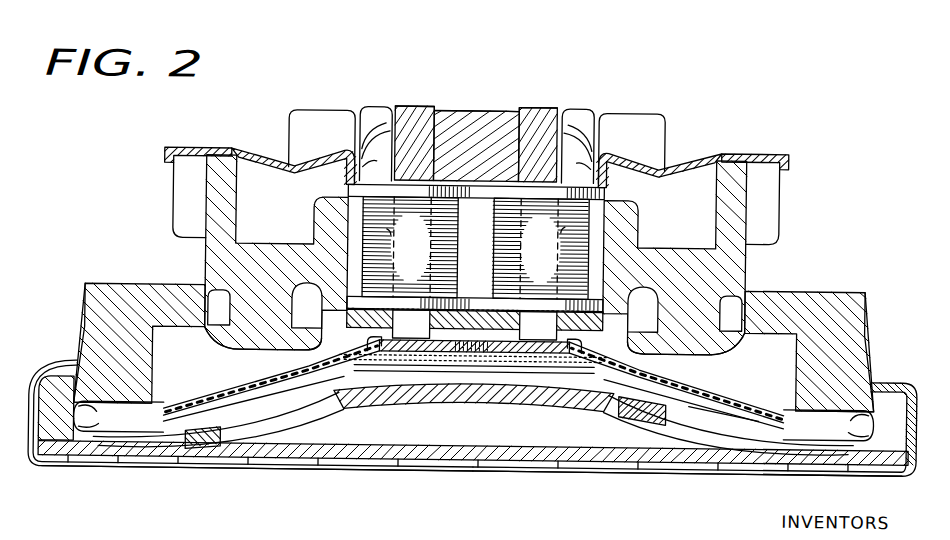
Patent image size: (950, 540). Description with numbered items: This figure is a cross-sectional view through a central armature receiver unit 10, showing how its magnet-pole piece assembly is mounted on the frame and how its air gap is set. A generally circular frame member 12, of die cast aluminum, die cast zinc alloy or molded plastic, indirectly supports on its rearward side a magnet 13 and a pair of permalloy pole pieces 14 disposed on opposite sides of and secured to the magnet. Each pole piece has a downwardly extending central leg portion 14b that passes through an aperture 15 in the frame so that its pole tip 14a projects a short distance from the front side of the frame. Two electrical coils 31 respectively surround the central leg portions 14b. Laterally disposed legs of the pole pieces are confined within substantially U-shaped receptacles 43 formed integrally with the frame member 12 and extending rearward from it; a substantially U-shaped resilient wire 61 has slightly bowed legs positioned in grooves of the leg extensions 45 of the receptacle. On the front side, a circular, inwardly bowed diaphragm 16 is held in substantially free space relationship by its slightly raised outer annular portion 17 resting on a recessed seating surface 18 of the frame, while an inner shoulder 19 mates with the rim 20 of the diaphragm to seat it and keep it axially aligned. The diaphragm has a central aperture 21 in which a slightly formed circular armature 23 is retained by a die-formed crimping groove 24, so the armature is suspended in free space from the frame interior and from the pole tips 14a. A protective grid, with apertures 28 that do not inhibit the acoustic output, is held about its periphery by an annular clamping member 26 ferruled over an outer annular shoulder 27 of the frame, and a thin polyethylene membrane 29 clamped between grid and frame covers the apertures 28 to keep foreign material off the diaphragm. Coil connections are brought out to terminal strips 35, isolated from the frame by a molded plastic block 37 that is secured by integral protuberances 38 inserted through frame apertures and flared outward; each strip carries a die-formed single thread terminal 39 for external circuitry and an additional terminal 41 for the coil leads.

The central armature receiver unit 10 is at (641, 97).
The frame member 12 is at (130, 297).
The magnet 13 is at (493, 126).
The pole pieces 14 is at (414, 112).
The pole tip 14a is at (409, 340).
The central leg portion 14b is at (390, 234).
The aperture 15 is at (368, 335).
The diaphragm 16 is at (240, 385).
The outer annular portion 17 is at (80, 350).
The recessed seating surface 18 is at (115, 406).
The inner shoulder 19 is at (125, 462).
The rim 20 is at (62, 468).
The central aperture 21 is at (400, 367).
The armature 23 is at (488, 340).
The crimping groove 24 is at (322, 370).
The annular clamping member 26 is at (98, 470).
The outer annular shoulder 27 is at (65, 372).
The apertures 28 is at (222, 445).
The thin membrane 29 is at (695, 422).
The electrical coils 31 is at (500, 210).
The terminal strips 35 is at (205, 152).
The molded plastic block 37 is at (226, 262).
The protuberances 38 is at (212, 347).
The single thread terminal 39 is at (255, 158).
The terminal 41 is at (185, 203).
The U-shaped receptacles 43 is at (465, 106).
The leg extensions 45 is at (367, 163).
The U-shaped resilient wire 61 is at (372, 138).